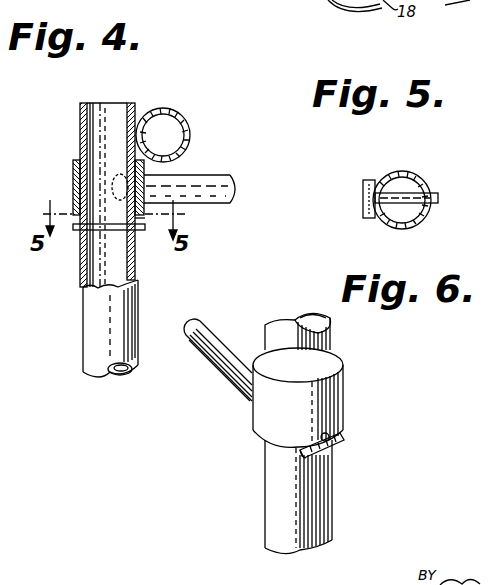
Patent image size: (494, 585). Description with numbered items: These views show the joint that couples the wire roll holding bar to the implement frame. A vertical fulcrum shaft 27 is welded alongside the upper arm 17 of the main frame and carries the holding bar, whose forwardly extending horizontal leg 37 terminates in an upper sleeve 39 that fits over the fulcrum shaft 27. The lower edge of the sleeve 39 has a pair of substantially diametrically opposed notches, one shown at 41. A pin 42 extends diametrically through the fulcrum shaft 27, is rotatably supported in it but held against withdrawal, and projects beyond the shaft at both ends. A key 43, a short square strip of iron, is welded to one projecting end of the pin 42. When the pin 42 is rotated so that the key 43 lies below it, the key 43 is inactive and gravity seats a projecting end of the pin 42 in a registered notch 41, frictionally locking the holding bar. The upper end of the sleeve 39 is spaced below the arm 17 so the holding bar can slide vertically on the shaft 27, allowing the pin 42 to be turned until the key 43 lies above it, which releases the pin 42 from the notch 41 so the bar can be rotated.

In FIG. 4, the upper arm 17 is at (188, 127).
In FIG. 4, the fulcrum shaft 27 is at (93, 334).
In FIG. 5, the fulcrum shaft 27 is at (409, 175).
In FIG. 6, the fulcrum shaft 27 is at (296, 320).
In FIG. 6, the leg 37 is at (224, 350).
In FIG. 4, the upper sleeve 39 is at (76, 168).
In FIG. 6, the upper sleeve 39 is at (335, 384).
In FIG. 4, the notch 41 is at (76, 202).
In FIG. 4, the pin 42 is at (142, 230).
In FIG. 5, the pin 42 is at (441, 197).
In FIG. 6, the pin 42 is at (329, 436).
In FIG. 4, the key 43 is at (74, 230).
In FIG. 5, the key 43 is at (366, 181).
In FIG. 6, the key 43 is at (336, 452).